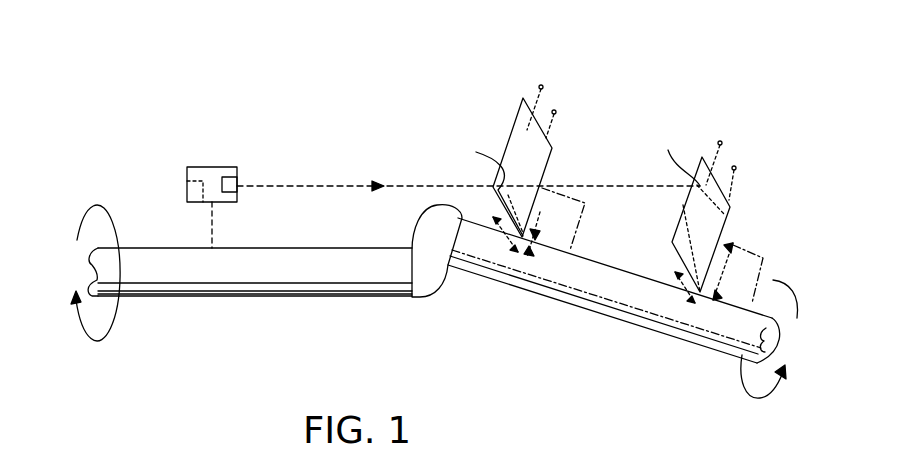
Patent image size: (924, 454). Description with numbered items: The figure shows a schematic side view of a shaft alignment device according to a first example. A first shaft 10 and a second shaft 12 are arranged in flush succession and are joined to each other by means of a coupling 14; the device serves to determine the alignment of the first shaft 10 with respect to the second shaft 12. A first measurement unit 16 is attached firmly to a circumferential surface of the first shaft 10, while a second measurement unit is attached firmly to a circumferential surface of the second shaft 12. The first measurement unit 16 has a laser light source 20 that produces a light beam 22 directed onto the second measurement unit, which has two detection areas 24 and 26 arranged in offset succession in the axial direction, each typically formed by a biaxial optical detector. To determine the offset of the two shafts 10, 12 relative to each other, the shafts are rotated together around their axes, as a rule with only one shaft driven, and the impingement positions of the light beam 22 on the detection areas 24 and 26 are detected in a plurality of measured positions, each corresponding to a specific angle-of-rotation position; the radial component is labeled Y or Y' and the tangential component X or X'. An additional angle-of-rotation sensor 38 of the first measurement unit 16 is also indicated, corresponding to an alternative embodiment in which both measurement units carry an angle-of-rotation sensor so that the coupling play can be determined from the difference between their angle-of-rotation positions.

The first shaft 10 is at (268, 275).
The second shaft 12 is at (613, 292).
The coupling 14 is at (442, 287).
The first measurement unit 16 is at (206, 173).
The laser light source 20 is at (230, 176).
The light beam 22 is at (322, 186).
The first detection area 24 is at (518, 128).
The second detection area 26 is at (702, 160).
The angle-of-rotation sensor 38 is at (188, 187).